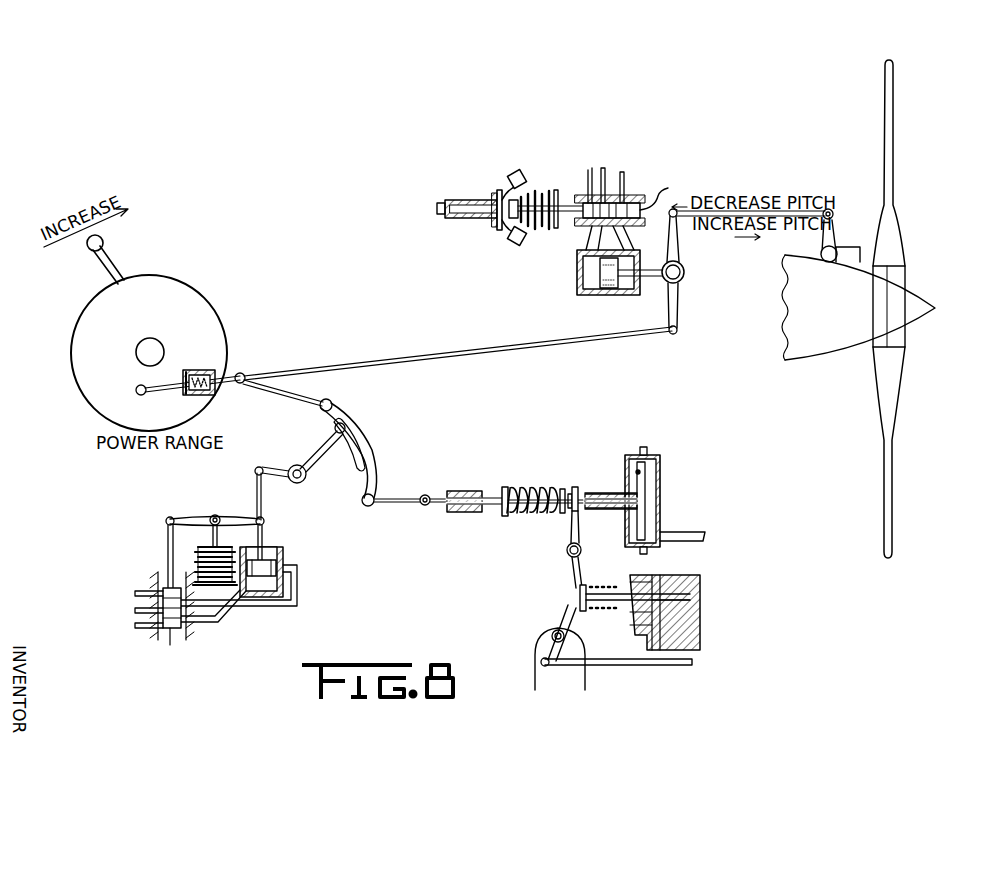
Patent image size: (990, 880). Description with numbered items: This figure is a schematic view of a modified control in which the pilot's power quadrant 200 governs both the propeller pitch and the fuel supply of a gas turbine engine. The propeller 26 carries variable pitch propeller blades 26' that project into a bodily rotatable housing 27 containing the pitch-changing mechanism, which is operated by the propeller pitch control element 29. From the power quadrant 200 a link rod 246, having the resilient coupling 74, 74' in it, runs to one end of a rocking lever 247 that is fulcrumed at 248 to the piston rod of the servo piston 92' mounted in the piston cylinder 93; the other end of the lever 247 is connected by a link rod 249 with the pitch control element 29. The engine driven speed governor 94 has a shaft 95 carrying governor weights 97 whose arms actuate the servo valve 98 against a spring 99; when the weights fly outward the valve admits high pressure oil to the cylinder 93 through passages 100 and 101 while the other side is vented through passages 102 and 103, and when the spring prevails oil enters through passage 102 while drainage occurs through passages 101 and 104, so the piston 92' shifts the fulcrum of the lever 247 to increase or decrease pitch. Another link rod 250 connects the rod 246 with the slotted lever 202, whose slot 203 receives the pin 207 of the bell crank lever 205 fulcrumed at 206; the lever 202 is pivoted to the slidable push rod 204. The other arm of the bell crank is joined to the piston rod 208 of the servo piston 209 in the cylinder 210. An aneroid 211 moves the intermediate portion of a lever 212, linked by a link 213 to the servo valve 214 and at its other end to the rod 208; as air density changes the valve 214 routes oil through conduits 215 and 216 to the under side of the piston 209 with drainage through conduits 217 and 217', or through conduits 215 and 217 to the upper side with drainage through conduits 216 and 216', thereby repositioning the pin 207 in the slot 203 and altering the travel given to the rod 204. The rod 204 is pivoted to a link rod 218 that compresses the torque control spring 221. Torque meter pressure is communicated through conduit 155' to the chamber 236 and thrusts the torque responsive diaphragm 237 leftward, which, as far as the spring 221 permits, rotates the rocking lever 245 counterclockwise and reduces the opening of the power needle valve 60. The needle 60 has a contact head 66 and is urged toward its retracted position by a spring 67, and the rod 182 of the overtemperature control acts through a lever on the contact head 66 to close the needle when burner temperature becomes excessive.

The propeller 26 is at (909, 406).
The variable pitch propeller blades 26' is at (904, 277).
The bodily rotatable housing 27 is at (915, 306).
The propeller pitch control element 29 is at (836, 224).
The power needle valve 60 is at (616, 606).
The contact head 66 is at (588, 582).
The spring 67 is at (606, 590).
The resilient coupling 74 is at (201, 366).
The resilient coupling 74' is at (173, 402).
The servo piston 92' is at (595, 271).
The piston cylinder 93 is at (592, 287).
The engine driven speed governor 94 is at (483, 196).
The shaft 95 is at (480, 212).
The governor weights 97 is at (522, 172).
The servo valve 98 is at (623, 200).
The spring 99 is at (540, 195).
The passage 100 is at (606, 172).
The passage 101 is at (594, 233).
The passage 102 is at (626, 233).
The passage 103 is at (625, 178).
The passage 104 is at (590, 168).
The conduit 155' is at (708, 526).
The rod 182 is at (636, 668).
The power quadrant 200 is at (200, 322).
The lever 202 is at (368, 478).
The slot 203 is at (355, 450).
The push rod 204 is at (400, 507).
The bell crank lever 205 is at (316, 445).
The fulcrum 206 is at (305, 484).
The pin 207 is at (346, 428).
The piston rod 208 is at (262, 499).
The servo piston 209 is at (277, 569).
The cylinder 210 is at (280, 584).
The aneroid 211 is at (197, 560).
The lever 212 is at (192, 517).
The link 213 is at (166, 524).
The servo valve 214 is at (170, 648).
The conduit 215 is at (140, 610).
The conduit 216 is at (218, 616).
The conduit 216' is at (119, 636).
The conduit 217 is at (245, 601).
The conduit 217' is at (119, 581).
The link rod 218 is at (492, 507).
The torque control spring 221 is at (540, 483).
The chamber 236 is at (652, 492).
The torque responsive diaphragm 237 is at (645, 466).
The rocking lever 245 is at (567, 536).
The link rod 246 is at (500, 347).
The rocking lever 247 is at (680, 300).
The fulcrum 248 is at (688, 270).
The link rod 249 is at (780, 210).
The link rod 250 is at (280, 396).